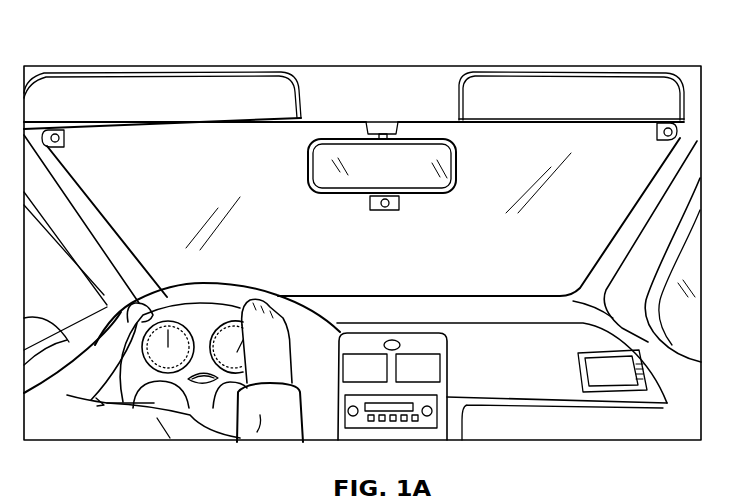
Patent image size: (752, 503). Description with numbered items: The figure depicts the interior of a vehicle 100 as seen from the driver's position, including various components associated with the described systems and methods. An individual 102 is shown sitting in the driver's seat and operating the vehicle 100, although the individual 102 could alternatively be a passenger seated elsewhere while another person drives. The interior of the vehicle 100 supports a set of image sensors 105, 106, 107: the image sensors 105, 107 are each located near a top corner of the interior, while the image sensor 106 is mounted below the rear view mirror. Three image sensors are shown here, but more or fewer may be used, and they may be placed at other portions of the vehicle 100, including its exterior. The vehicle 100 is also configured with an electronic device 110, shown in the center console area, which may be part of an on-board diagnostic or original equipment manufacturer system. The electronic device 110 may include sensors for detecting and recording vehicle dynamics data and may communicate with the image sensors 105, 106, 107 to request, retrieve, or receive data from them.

The vehicle 100 is at (425, 41).
The individual 102 is at (77, 427).
The image sensor 105 is at (66, 135).
The image sensor 106 is at (385, 208).
The image sensor 107 is at (657, 136).
The electronic device 110 is at (419, 340).